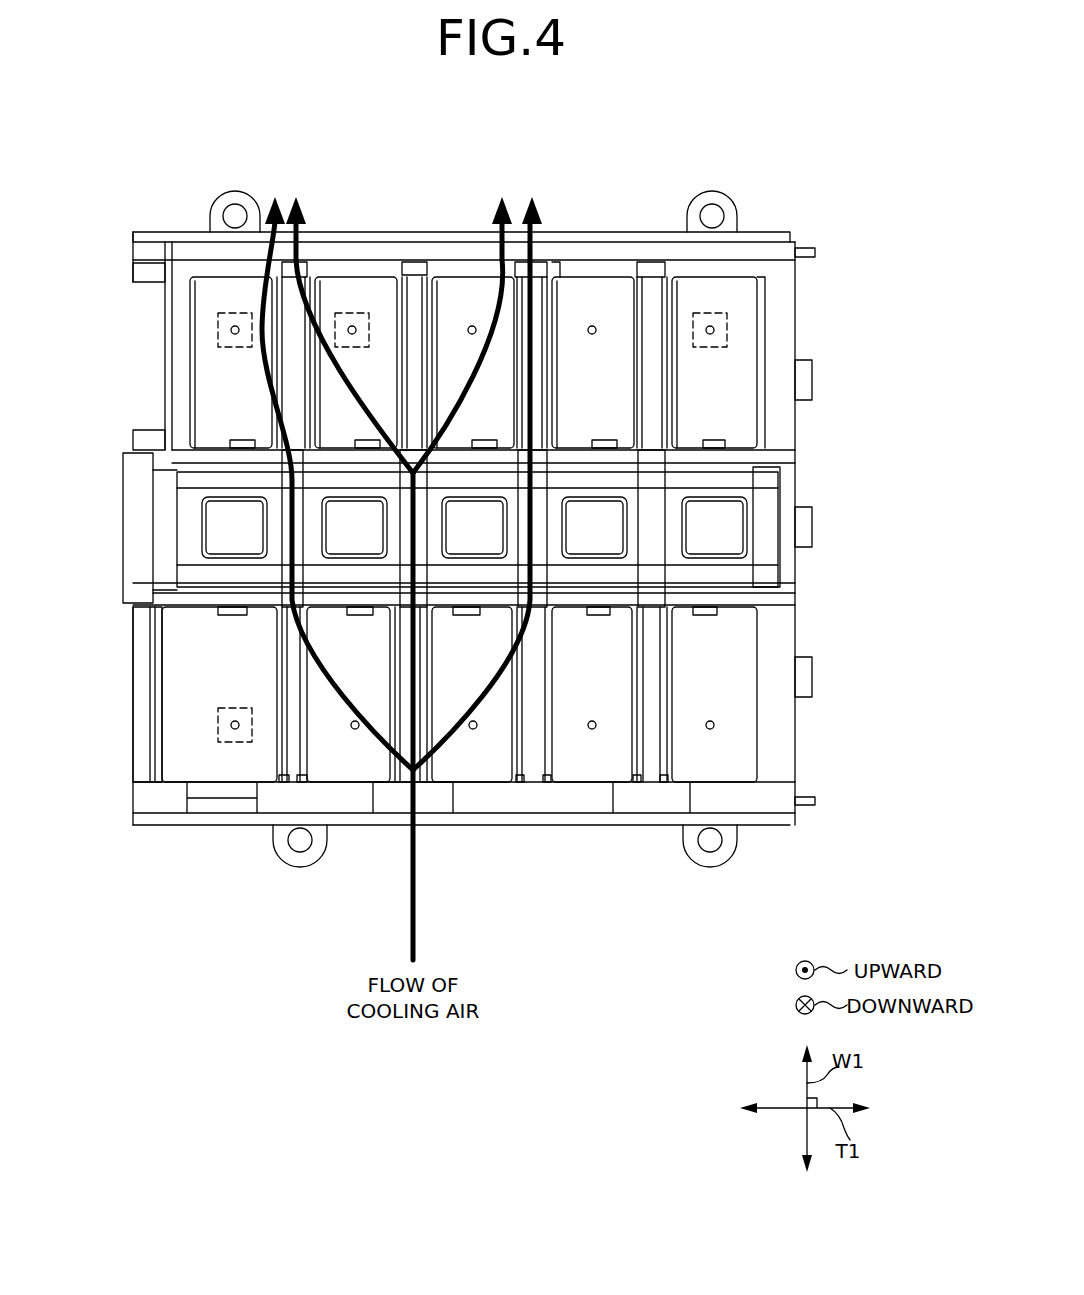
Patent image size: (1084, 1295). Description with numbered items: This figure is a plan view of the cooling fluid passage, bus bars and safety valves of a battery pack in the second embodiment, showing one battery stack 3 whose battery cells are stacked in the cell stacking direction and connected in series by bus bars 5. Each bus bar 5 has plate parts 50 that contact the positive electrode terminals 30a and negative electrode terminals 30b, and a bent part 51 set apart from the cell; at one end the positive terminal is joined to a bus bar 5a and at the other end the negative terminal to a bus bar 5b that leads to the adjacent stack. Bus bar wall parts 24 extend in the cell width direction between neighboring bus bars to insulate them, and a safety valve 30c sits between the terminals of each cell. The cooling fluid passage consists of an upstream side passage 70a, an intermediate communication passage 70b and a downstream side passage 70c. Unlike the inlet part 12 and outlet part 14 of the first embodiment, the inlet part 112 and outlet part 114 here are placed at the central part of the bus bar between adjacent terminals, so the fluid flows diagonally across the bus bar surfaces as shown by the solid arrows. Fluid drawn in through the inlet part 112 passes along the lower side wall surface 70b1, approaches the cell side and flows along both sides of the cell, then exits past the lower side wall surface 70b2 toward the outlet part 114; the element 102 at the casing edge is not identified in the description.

The battery stack 3 is at (770, 203).
The bus bar 5 is at (212, 298).
The bus bar 5a is at (170, 740).
The bus bar 5b is at (745, 322).
The inlet part 12 is at (210, 798).
The outlet part 14 is at (718, 250).
The bus bar wall part 24 is at (378, 265).
The positive electrode terminal 30a is at (333, 255).
The negative electrode terminal 30b is at (710, 312).
The safety valve 30c is at (730, 450).
The plate part 50 is at (360, 296).
The bent part 51 is at (235, 313).
The upstream side passage 70a is at (380, 733).
The intermediate communication passage 70b is at (687, 487).
The lower side wall surface 70b1 is at (688, 550).
The lower side wall surface 70b2 is at (418, 440).
The downstream side passage 70c is at (557, 437).
The frame 102 is at (802, 761).
The inlet part 112 is at (162, 798).
The outlet part 114 is at (310, 216).